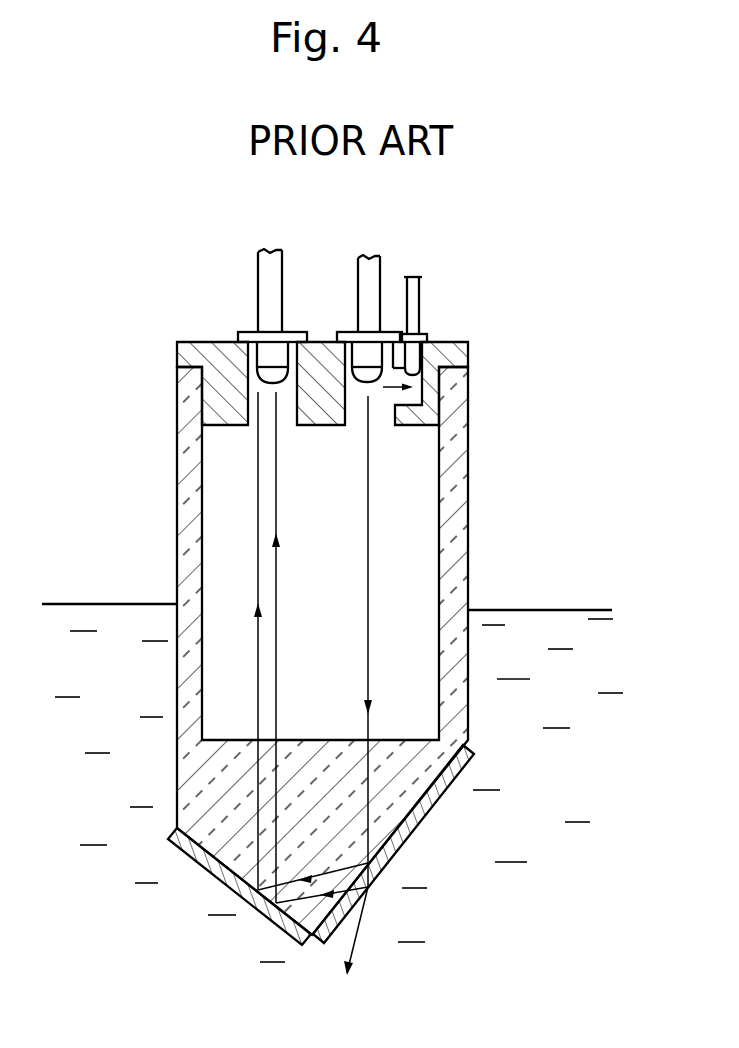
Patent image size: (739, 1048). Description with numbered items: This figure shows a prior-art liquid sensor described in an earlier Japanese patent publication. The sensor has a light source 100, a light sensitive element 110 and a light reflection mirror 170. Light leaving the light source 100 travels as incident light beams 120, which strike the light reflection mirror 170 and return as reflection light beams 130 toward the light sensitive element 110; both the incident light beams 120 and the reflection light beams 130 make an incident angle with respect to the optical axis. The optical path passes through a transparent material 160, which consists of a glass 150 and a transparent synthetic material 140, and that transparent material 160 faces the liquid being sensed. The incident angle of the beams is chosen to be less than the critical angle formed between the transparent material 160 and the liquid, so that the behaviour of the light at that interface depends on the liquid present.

The light source 100 is at (368, 370).
The light sensitive element 110 is at (267, 367).
The incident light beams 120 is at (370, 480).
The reflection light beams 130 is at (276, 460).
The transparent synthetic material 140 is at (450, 558).
The glass 150 is at (427, 810).
The transparent material 160 is at (160, 729).
The light reflection mirror 170 is at (203, 853).